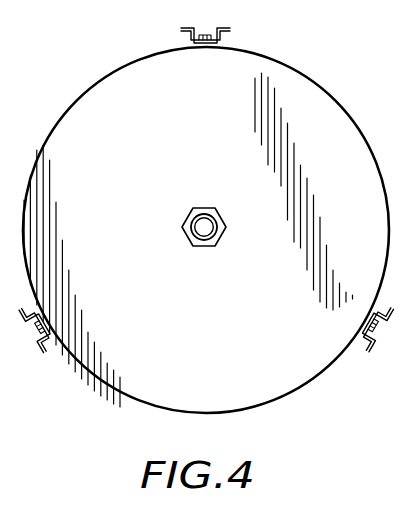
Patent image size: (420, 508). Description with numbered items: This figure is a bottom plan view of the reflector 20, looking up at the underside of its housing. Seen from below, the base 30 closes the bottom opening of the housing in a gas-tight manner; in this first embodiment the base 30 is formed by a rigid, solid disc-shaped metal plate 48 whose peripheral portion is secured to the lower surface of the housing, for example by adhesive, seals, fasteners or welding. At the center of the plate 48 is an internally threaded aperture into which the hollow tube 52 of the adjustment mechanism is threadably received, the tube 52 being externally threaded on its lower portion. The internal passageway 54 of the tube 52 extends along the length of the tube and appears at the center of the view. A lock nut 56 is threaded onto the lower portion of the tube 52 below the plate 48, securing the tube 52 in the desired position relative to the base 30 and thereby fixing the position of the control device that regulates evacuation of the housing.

The reflector 20 is at (343, 99).
The base 30 is at (151, 378).
The plate 48 is at (292, 288).
The hollow tube 52 is at (205, 247).
The internal passageway 54 is at (206, 228).
The lock nut 56 is at (190, 207).